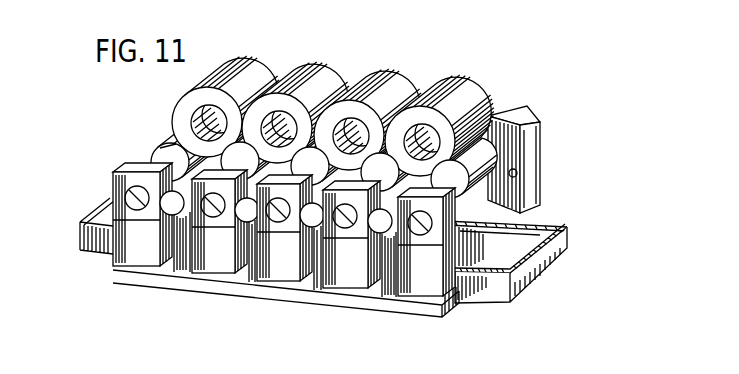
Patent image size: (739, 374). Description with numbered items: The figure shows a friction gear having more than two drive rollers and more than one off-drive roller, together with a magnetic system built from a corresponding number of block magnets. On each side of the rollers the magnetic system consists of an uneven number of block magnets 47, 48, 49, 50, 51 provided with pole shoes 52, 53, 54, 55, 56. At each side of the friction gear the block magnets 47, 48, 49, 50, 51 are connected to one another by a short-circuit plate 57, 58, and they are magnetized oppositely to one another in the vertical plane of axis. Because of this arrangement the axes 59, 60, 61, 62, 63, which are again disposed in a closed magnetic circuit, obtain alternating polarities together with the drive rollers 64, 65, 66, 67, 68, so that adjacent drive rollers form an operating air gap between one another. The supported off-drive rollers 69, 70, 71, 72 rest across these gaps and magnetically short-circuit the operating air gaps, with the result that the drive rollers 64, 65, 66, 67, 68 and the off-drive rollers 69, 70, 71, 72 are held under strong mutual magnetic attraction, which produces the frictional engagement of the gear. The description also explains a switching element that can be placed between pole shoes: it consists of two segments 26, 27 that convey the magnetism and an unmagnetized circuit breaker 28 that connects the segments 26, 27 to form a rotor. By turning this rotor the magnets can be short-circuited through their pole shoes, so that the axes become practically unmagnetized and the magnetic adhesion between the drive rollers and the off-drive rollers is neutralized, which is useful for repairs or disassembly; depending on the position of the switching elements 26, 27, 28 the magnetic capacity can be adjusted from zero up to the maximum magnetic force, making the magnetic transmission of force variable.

The segment 26 is at (125, 160).
The segment 27 is at (173, 274).
The circuit breaker 28 is at (155, 162).
The block magnet 47 is at (116, 214).
The block magnet 48 is at (236, 275).
The block magnet 49 is at (284, 267).
The block magnet 50 is at (352, 272).
The block magnet 51 is at (426, 299).
The pole shoe 52 is at (125, 200).
The pole shoe 53 is at (190, 266).
The pole shoe 54 is at (288, 292).
The pole shoe 55 is at (323, 245).
The pole shoe 56 is at (385, 290).
The short-circuit plate 57 is at (455, 302).
The short-circuit plate 58 is at (549, 162).
The axis 59 is at (118, 247).
The axis 60 is at (175, 143).
The axis 61 is at (252, 284).
The axis 62 is at (353, 300).
The axis 63 is at (422, 250).
The drive roller 64 is at (166, 146).
The drive roller 65 is at (268, 86).
The drive roller 66 is at (352, 80).
The drive roller 67 is at (432, 84).
The drive roller 68 is at (525, 175).
The off-drive roller 69 is at (242, 72).
The off-drive roller 70 is at (315, 75).
The off-drive roller 71 is at (388, 80).
The off-drive roller 72 is at (453, 90).